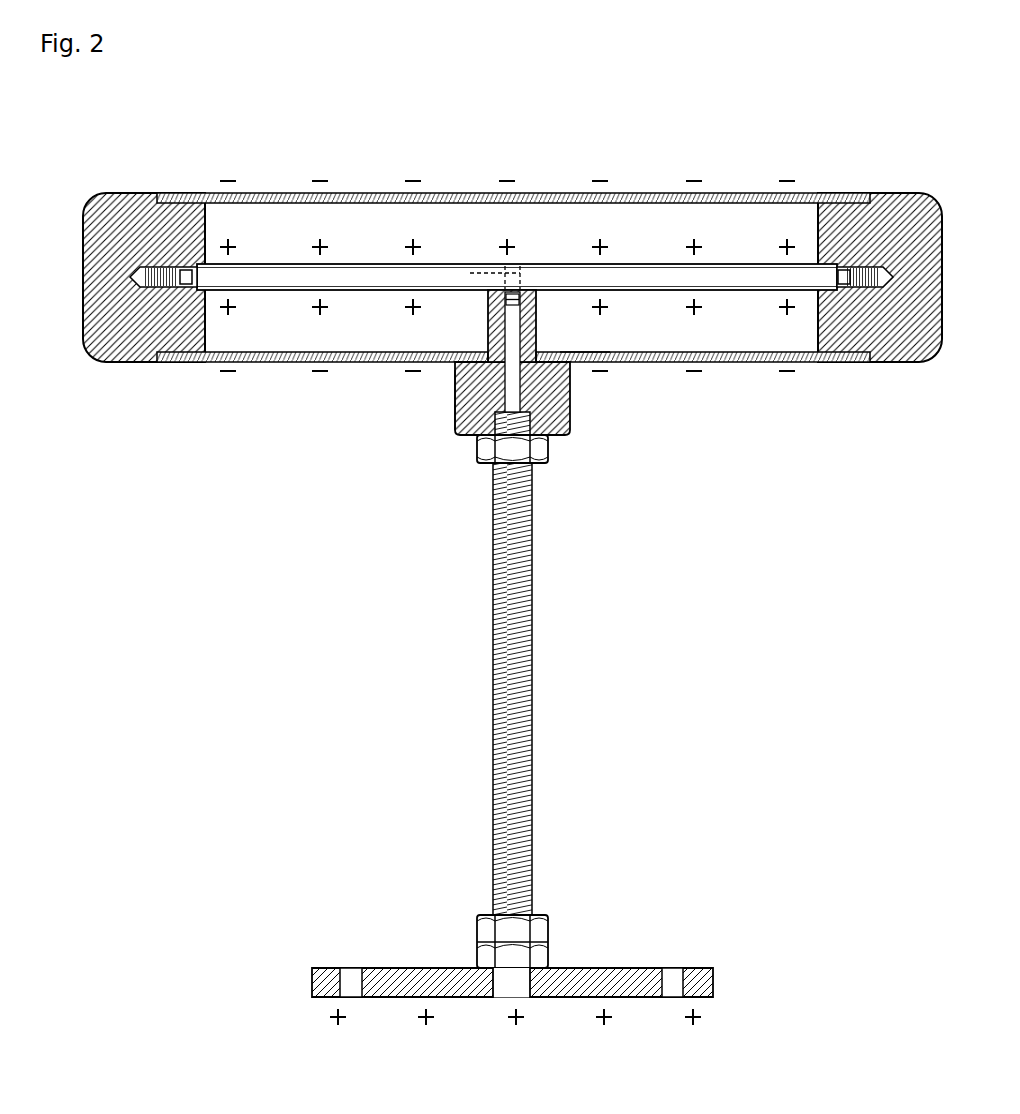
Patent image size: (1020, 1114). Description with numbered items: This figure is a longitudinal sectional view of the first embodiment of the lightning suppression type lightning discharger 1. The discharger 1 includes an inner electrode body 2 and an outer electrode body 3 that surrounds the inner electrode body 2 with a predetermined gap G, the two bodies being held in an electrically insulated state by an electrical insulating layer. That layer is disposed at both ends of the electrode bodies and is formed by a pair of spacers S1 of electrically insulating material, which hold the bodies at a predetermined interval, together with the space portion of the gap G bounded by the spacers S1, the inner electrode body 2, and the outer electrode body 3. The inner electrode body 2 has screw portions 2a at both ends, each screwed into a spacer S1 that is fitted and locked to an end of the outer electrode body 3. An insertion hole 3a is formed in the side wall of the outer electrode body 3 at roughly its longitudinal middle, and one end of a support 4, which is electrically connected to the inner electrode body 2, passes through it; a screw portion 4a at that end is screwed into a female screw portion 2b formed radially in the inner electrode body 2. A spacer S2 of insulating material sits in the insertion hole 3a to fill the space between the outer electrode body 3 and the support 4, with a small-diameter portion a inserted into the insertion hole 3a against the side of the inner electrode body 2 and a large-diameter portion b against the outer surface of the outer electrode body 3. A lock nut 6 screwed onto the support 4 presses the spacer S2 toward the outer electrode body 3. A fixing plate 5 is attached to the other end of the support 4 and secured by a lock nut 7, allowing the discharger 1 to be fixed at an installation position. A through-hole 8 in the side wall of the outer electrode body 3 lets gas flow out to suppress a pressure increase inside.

The lightning suppression type lightning discharger 1 is at (405, 418).
The inner electrode body 2 is at (750, 263).
The screw portion 2a is at (168, 268).
The female screw portion 2b is at (485, 272).
The outer electrode body 3 is at (822, 363).
The insertion hole 3a is at (538, 345).
The support 4 is at (532, 617).
The screw portion 4a is at (517, 289).
The fixing plate 5 is at (690, 968).
The lock nut 6 is at (548, 448).
The lock nut 7 is at (548, 930).
The through-hole 8 is at (581, 352).
The small-diameter portion a is at (489, 323).
The large-diameter portion b is at (455, 397).
The gap G is at (278, 245).
The spacer S1 is at (122, 363).
The spacer S2 is at (570, 415).